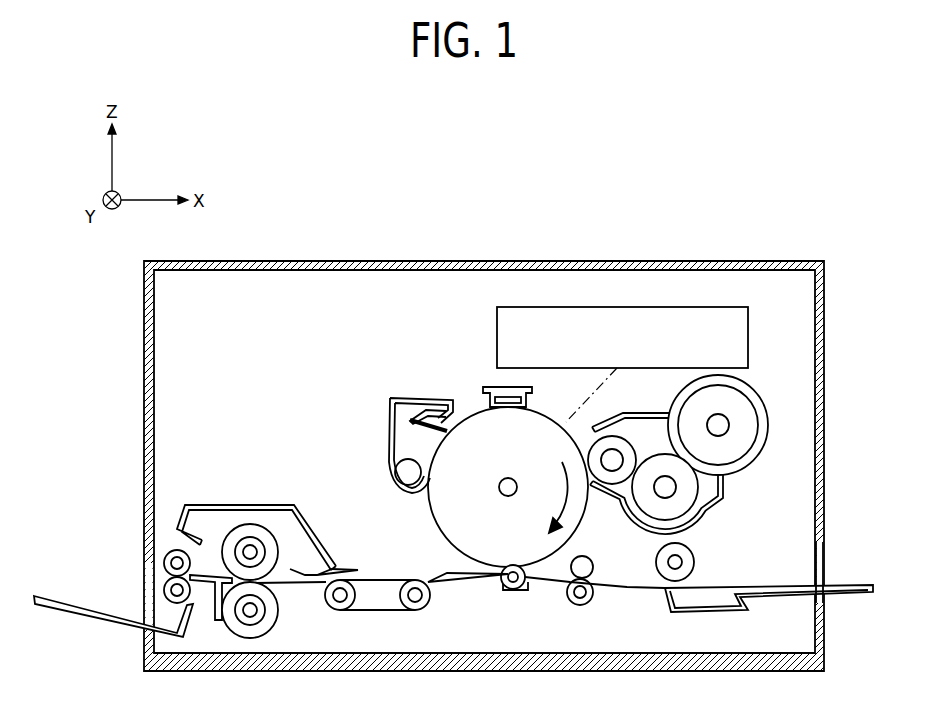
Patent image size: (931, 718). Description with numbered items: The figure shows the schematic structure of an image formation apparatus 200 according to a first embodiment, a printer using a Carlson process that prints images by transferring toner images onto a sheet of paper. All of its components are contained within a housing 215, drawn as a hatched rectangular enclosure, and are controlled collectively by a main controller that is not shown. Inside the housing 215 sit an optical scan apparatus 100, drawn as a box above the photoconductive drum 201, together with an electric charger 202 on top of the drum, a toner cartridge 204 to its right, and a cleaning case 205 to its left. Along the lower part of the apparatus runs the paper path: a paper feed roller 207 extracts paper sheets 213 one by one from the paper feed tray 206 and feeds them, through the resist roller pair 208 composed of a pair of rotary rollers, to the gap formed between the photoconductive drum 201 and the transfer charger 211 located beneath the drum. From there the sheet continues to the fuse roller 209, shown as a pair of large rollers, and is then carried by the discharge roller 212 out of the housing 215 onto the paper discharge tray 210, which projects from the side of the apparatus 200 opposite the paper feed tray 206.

The optical scan apparatus 100 is at (680, 307).
The image formation apparatus 200 is at (555, 234).
The photoconductive drum 201 is at (473, 410).
The electric charger 202 is at (492, 390).
The toner cartridge 204 is at (767, 443).
The cleaning case 205 is at (387, 441).
The paper feed tray 206 is at (853, 595).
The paper feed roller 207 is at (695, 562).
The resist roller pair 208 is at (592, 602).
The fuse roller 209 is at (243, 523).
The paper discharge tray 210 is at (93, 622).
The transfer charger 211 is at (503, 586).
The discharge roller 212 is at (168, 553).
The paper sheets 213 is at (778, 588).
The housing 215 is at (797, 259).